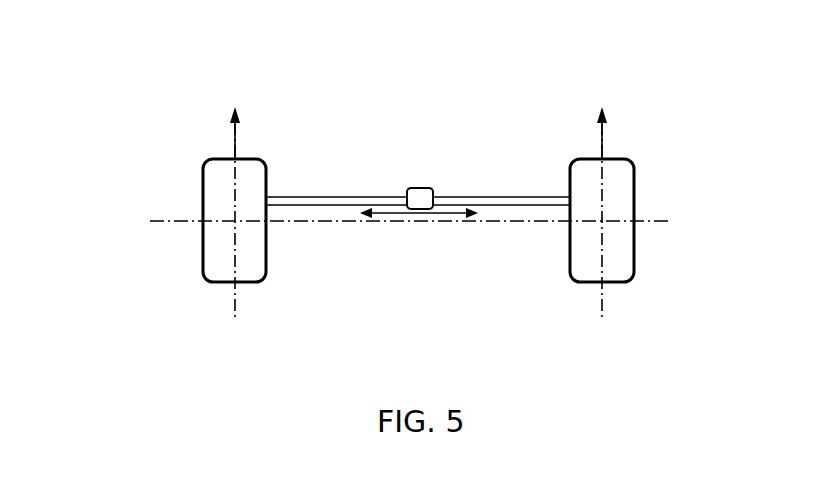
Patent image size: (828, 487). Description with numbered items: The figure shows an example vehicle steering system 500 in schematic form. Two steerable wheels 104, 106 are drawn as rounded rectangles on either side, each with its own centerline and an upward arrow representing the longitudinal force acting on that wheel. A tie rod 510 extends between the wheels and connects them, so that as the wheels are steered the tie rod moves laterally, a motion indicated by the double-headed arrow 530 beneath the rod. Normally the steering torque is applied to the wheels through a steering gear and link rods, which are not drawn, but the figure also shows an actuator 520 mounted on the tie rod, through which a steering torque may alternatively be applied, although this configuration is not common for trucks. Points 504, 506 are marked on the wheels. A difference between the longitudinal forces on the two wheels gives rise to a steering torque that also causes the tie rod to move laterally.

The vehicle steering system 500 is at (114, 59).
The steerable wheel 104 is at (203, 174).
The steerable wheel 106 is at (580, 159).
The tie rod 510 is at (325, 197).
The actuator 520 is at (418, 188).
The lateral movement of the tie rod 530 is at (420, 209).
The first wheel contact point 504 is at (265, 246).
The second wheel contact point 506 is at (560, 248).